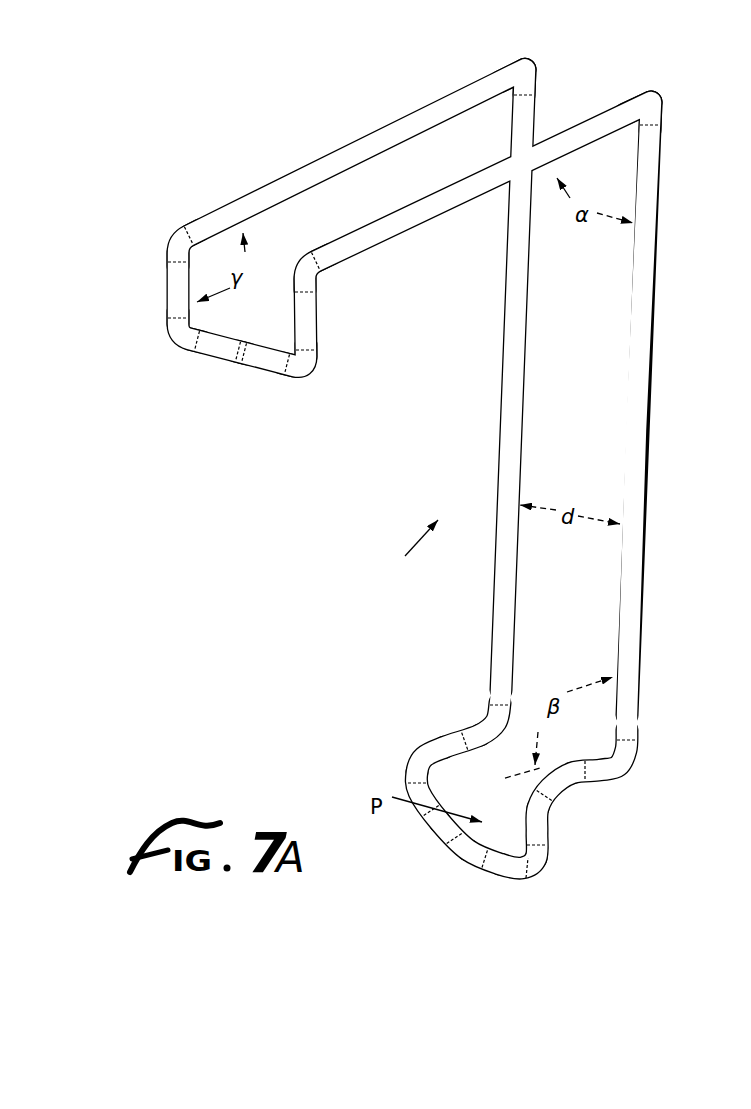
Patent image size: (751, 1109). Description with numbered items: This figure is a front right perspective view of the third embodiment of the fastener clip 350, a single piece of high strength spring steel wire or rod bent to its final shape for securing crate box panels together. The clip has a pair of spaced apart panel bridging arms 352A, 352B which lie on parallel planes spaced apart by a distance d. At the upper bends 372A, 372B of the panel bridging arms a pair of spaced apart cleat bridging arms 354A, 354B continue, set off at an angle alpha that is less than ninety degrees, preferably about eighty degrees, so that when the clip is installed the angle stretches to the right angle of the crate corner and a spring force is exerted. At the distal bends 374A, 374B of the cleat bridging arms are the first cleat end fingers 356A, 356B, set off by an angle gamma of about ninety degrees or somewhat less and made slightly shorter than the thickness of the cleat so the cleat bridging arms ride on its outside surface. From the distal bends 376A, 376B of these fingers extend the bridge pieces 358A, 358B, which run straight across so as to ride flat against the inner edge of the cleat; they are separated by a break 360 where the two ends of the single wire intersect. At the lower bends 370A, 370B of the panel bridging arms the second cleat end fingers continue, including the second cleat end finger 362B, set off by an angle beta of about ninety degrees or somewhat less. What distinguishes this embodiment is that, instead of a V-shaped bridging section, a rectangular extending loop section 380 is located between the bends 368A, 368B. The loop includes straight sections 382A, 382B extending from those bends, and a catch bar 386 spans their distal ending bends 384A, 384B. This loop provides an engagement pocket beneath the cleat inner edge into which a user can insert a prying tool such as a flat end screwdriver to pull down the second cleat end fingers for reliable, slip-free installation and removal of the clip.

The fastener clip 350 is at (408, 553).
The panel bridging arm 352A is at (642, 468).
The panel bridging arm 352B is at (506, 434).
The cleat bridging arm 354A is at (428, 213).
The cleat bridging arm 354B is at (326, 160).
The first cleat end finger 356A is at (318, 322).
The first cleat end finger 356B is at (167, 291).
The bridge piece 358A is at (272, 367).
The bridge piece 358B is at (212, 353).
The break 360 is at (242, 363).
The second cleat end finger 362B is at (470, 728).
The bend 368A is at (548, 798).
The bend 368B is at (406, 772).
The lower bend 370A is at (640, 758).
The lower bend 370B is at (512, 724).
The upper bend 372A is at (659, 118).
The upper bend 372B is at (530, 82).
The distal bend 374A is at (313, 279).
The distal bend 374B is at (171, 238).
The distal bend 376A is at (308, 373).
The distal bend 376B is at (176, 340).
The rectangular extending loop section 380 is at (512, 812).
The straight section 382A is at (552, 843).
The straight section 382B is at (433, 832).
The distal ending bend 384A is at (545, 877).
The distal ending bend 384B is at (455, 848).
The catch bar 386 is at (490, 874).